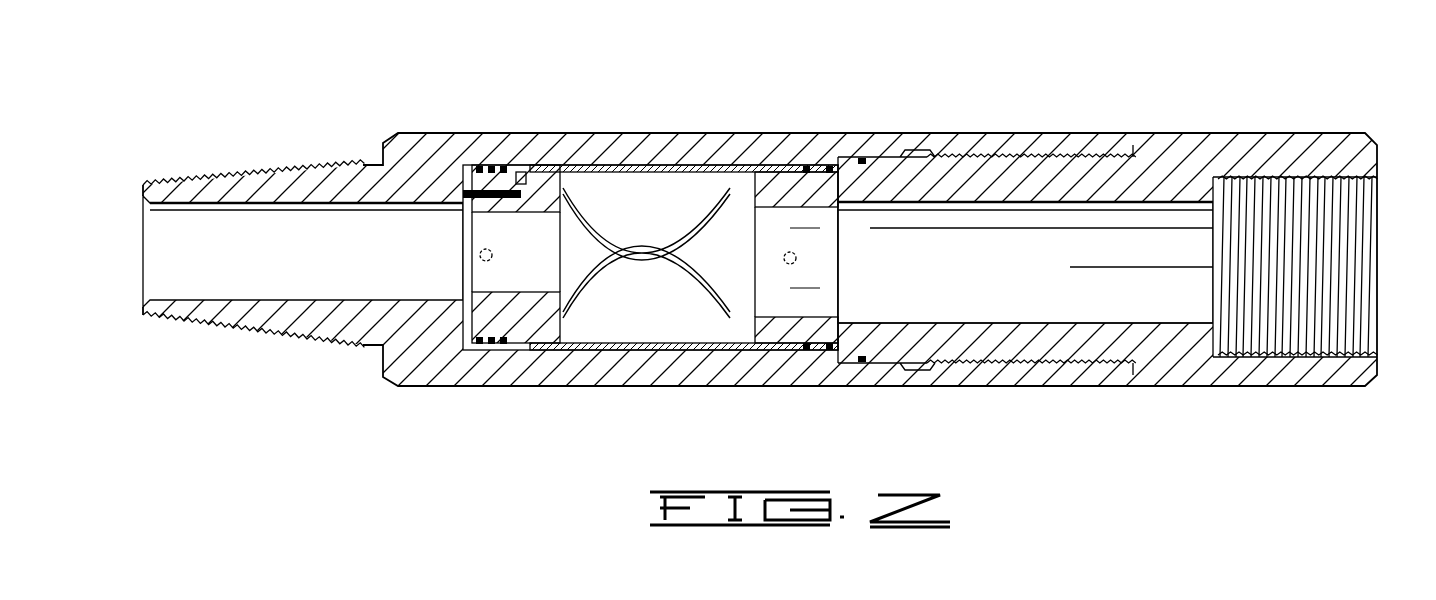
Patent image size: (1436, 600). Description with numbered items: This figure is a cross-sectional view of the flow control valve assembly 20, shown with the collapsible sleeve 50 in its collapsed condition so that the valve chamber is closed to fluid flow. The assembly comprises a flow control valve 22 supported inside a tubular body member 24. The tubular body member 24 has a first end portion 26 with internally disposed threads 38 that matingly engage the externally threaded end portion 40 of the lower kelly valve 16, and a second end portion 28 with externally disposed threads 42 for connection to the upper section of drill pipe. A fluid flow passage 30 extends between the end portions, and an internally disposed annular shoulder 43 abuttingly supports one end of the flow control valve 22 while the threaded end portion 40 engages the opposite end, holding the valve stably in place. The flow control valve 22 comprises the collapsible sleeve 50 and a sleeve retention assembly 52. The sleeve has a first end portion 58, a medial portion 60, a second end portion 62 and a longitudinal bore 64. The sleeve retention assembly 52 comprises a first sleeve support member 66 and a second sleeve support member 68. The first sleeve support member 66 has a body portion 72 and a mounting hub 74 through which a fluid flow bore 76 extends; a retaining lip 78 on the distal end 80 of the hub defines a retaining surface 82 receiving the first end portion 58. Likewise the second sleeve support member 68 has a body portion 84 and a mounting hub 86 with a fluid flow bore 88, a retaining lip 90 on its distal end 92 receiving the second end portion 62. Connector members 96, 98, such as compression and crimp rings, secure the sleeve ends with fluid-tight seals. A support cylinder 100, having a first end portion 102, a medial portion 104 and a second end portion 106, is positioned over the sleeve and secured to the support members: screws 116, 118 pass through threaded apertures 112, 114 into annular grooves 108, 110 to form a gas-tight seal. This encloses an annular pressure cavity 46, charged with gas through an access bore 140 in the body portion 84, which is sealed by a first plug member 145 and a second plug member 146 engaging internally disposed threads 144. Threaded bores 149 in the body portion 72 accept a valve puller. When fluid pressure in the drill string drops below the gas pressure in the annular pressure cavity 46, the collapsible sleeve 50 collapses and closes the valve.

The lower kelly valve 16 is at (1226, 133).
The flow control valve assembly 20 is at (732, 82).
The flow control valve 22 is at (645, 160).
The tubular body member 24 is at (875, 125).
The first end portion 26 is at (1100, 148).
The second end portion 28 is at (238, 188).
The fluid flow passage 30 is at (563, 165).
The internally disposed threads 38 is at (1012, 152).
The externally threaded end portion 40 is at (990, 355).
The externally disposed threads 42 is at (258, 330).
The internally disposed annular shoulder 43 is at (420, 386).
The annular pressure cavity 46 is at (697, 165).
The collapsible sleeve 50 is at (622, 262).
The sleeve retention assembly 52 is at (463, 250).
The first end portion 58 is at (735, 320).
The medial portion 60 is at (630, 250).
The second end portion 62 is at (575, 196).
The bore 64 is at (700, 262).
The first sleeve support member 66 is at (825, 228).
The second sleeve support member 68 is at (472, 272).
The body portion 72 is at (798, 258).
The mounting hub 74 is at (735, 245).
The fluid flow bore 76 is at (825, 262).
The retaining lip 78 is at (730, 191).
The distal end 80 is at (745, 255).
The retaining surface 82 is at (790, 300).
The body portion 84 is at (505, 292).
The mounting hub 86 is at (560, 250).
The fluid flow bore 88 is at (470, 262).
The retaining lip 90 is at (553, 318).
The distal end 92 is at (568, 200).
The connector member 96 is at (750, 165).
The connector member 98 is at (530, 166).
The support cylinder 100 is at (625, 160).
The first end portion 102 is at (828, 165).
The medial portion 104 is at (600, 165).
The second end portion 106 is at (490, 166).
The annular groove 108 is at (808, 165).
The annular groove 110 is at (500, 166).
The threaded aperture 112 is at (815, 355).
The threaded aperture 114 is at (465, 386).
The screw 116 is at (820, 165).
The screw 118 is at (482, 166).
The access bore 140 is at (560, 253).
The internally disposed threads 144 is at (463, 228).
The first plug member 145 is at (523, 165).
The second plug member 146 is at (470, 185).
The threaded bores 149 is at (865, 158).